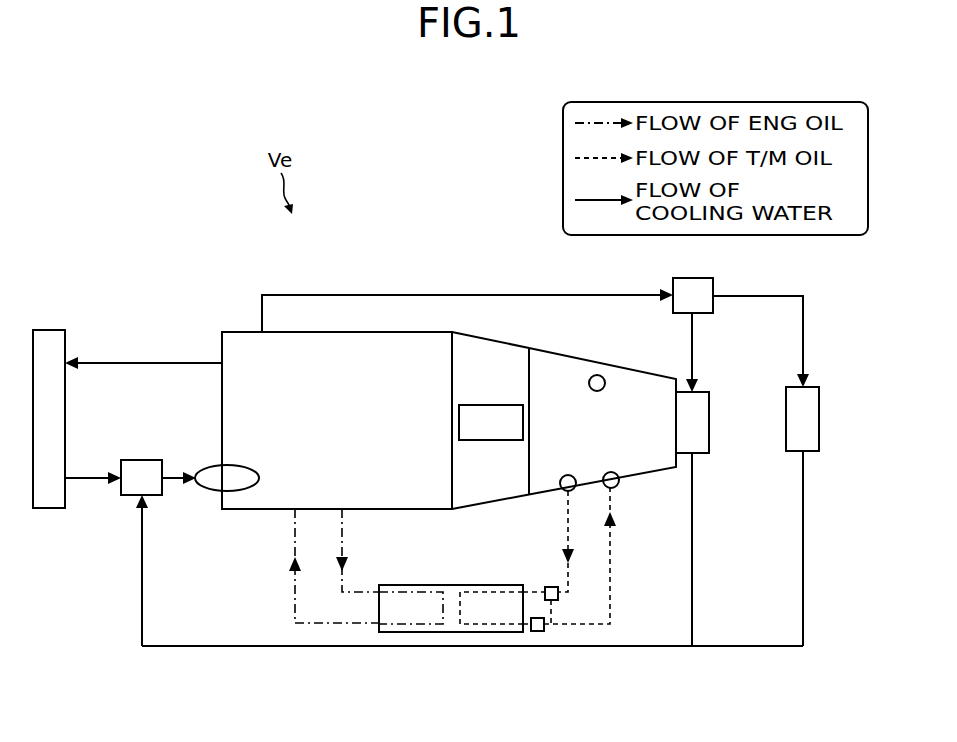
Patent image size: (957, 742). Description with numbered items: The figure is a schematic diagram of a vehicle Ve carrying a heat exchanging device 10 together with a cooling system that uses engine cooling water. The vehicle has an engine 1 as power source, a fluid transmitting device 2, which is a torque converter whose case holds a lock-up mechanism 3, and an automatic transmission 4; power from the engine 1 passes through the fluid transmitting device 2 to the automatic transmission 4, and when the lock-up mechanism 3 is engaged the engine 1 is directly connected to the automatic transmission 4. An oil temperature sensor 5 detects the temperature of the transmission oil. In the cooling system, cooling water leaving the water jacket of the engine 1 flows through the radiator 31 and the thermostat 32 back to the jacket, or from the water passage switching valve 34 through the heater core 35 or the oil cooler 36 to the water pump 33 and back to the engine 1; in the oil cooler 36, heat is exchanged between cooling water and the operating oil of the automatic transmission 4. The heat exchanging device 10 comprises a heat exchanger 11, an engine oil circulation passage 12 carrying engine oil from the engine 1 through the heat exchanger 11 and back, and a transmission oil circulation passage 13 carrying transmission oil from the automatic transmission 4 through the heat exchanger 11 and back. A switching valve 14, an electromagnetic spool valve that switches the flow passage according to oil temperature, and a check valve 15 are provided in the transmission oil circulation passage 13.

The engine 1 is at (236, 330).
The fluid transmitting device 2 is at (492, 338).
The lock-up mechanism 3 is at (498, 405).
The automatic transmission 4 is at (568, 354).
The oil temperature sensor 5 is at (603, 376).
The heat exchanging device 10 is at (453, 672).
The heat exchanger 11 is at (449, 585).
The engine oil circulation passage 12 is at (295, 595).
The transmission oil circulation passage 13 is at (612, 567).
The switching valve 14 is at (549, 587).
The check valve 15 is at (537, 632).
The radiator 31 is at (49, 329).
The thermostat 32 is at (133, 459).
The water pump 33 is at (207, 465).
The water passage switching valve 34 is at (706, 258).
The heater core 35 is at (820, 423).
The oil cooler 36 is at (710, 423).